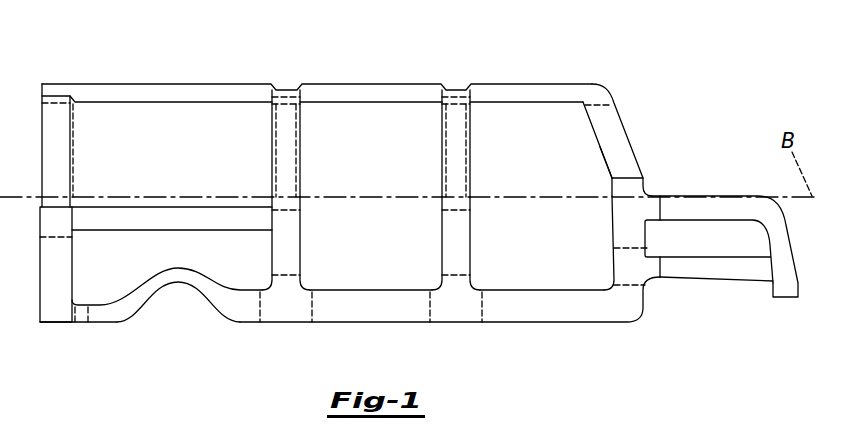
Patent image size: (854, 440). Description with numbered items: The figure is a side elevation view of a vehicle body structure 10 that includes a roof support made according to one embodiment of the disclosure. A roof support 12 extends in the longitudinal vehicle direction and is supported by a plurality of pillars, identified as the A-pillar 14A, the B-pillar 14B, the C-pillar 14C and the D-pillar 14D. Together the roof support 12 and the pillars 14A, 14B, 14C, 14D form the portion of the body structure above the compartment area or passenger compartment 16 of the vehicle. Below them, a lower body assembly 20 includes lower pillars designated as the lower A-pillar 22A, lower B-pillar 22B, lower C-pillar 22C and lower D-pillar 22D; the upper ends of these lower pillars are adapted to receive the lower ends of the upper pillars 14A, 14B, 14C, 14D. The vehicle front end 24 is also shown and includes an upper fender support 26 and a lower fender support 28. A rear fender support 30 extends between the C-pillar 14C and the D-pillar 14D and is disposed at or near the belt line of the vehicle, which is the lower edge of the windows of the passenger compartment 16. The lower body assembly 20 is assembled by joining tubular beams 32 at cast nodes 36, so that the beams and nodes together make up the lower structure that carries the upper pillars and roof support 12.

The vehicle body structure 10 is at (630, 62).
The roof support 12 is at (373, 90).
The A-pillar 14A is at (616, 141).
The B-pillar 14B is at (458, 142).
The C-pillar 14C is at (286, 142).
The D-pillar 14D is at (57, 141).
The passenger compartment 16 is at (515, 117).
The lower body assembly 20 is at (336, 284).
The lower A-pillar 22A is at (623, 227).
The lower B-pillar 22B is at (452, 262).
The lower C-pillar 22C is at (286, 262).
The lower D-pillar 22D is at (62, 262).
The vehicle front end 24 is at (701, 186).
The upper fender support 26 is at (716, 212).
The lower fender support 28 is at (702, 271).
The rear fender support 30 is at (170, 220).
The tubular beams 32 is at (226, 300).
The cast nodes 36 is at (287, 322).